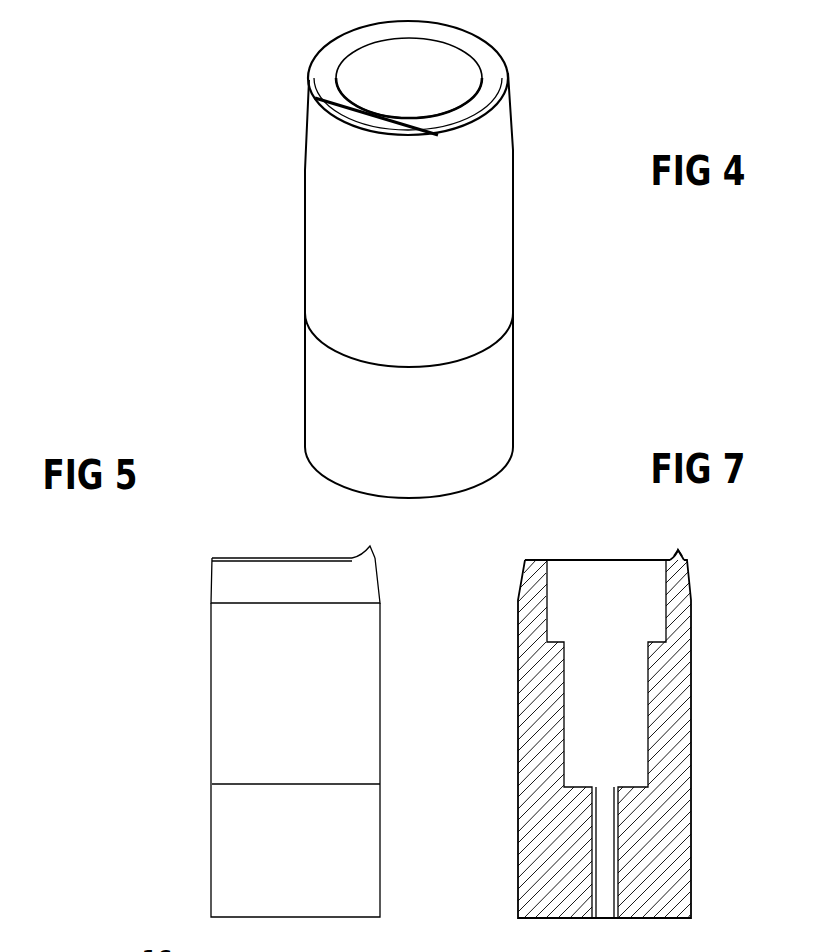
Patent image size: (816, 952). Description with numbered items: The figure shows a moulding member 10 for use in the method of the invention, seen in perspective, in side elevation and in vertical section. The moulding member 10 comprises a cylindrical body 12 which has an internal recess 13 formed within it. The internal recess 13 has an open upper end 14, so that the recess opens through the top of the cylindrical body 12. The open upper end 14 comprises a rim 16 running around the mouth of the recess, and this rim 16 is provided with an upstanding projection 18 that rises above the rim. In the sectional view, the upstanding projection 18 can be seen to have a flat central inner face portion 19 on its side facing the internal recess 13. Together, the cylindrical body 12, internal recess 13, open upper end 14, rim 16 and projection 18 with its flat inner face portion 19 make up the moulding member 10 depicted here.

In FIG. 4, the first moulding member 10 is at (296, 224).
In FIG. 5, the first moulding member 10 is at (190, 692).
In FIG. 7, the first moulding member 10 is at (693, 787).
In FIG. 4, the cylindrical body 12 is at (497, 288).
In FIG. 5, the cylindrical body 12 is at (318, 717).
In FIG. 7, the cylindrical body 12 is at (691, 718).
In FIG. 4, the internal recess 13 is at (368, 63).
In FIG. 7, the internal recess 13 is at (605, 600).
In FIG. 4, the open upper end 14 is at (497, 53).
In FIG. 5, the open upper end 14 is at (215, 558).
In FIG. 7, the open upper end 14 is at (527, 560).
In FIG. 4, the rim 16 is at (487, 92).
In FIG. 5, the rim 16 is at (380, 592).
In FIG. 4, the upstanding projection 18 is at (367, 117).
In FIG. 5, the upstanding projection 18 is at (375, 552).
In FIG. 7, the upstanding projection 18 is at (687, 555).
In FIG. 7, the flat central inner face portion 19 is at (675, 557).